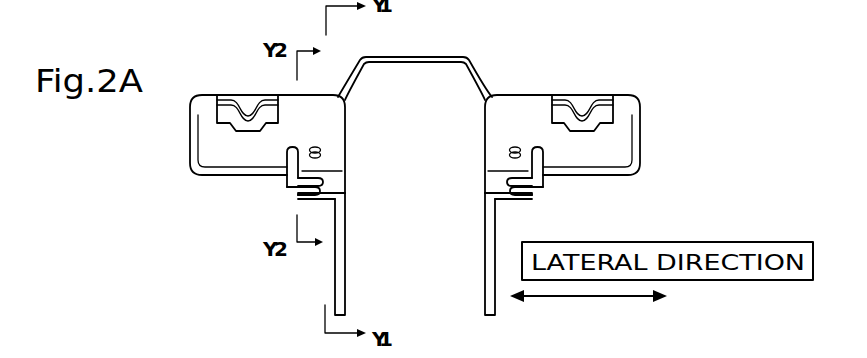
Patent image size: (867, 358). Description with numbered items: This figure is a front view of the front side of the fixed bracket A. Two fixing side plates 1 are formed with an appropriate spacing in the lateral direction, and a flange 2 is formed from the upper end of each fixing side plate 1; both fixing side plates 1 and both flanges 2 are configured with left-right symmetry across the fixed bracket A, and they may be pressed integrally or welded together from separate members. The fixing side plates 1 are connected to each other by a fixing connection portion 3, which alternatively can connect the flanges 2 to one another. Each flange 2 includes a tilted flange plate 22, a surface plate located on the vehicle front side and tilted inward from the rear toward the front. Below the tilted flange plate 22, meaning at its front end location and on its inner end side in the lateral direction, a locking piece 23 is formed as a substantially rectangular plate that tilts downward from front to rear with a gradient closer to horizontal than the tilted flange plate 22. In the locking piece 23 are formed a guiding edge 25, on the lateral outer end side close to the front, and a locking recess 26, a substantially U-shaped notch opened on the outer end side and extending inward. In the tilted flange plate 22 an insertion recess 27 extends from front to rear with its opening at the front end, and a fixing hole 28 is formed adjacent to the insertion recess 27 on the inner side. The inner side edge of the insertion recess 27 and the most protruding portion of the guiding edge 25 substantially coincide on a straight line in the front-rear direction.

The fixing side plate 1 is at (347, 276).
The flange 2 is at (198, 86).
The fixing connection portion 3 is at (437, 60).
The tilted flange plate 22 is at (206, 153).
The locking piece 23 is at (328, 198).
The guiding edge 25 is at (297, 197).
The locking recess 26 is at (323, 182).
The insertion recess 27 is at (292, 160).
The fixing hole 28 is at (323, 151).
The fixed bracket A is at (648, 100).